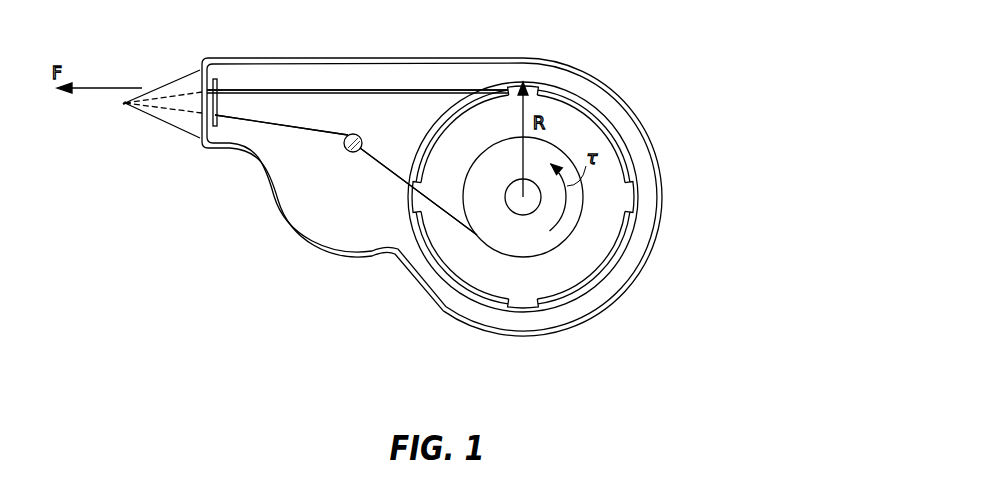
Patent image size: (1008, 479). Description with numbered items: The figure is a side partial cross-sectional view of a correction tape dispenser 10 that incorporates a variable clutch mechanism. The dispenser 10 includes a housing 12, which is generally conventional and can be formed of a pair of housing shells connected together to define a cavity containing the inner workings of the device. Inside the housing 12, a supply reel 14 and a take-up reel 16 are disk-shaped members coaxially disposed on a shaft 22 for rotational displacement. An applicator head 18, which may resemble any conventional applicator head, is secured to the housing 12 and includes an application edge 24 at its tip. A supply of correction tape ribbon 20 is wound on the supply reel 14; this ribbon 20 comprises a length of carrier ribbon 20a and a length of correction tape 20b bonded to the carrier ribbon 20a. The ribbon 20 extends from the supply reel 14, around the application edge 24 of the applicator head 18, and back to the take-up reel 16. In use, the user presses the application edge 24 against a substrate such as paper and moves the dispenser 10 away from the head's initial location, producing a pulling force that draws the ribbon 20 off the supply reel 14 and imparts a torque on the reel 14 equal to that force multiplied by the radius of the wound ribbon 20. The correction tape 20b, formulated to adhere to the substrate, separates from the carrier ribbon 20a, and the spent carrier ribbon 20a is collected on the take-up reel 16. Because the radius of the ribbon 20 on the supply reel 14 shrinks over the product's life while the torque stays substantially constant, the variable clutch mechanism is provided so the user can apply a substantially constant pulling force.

The correction tape dispenser 10 is at (572, 60).
The housing 12 is at (605, 82).
The supply reel 14 is at (588, 135).
The take-up reel 16 is at (546, 243).
The applicator head 18 is at (182, 85).
The correction tape ribbon 20 is at (495, 88).
The carrier ribbon 20a is at (322, 93).
The correction tape 20b is at (330, 90).
The shaft 22 is at (524, 215).
The application edge 24 is at (123, 106).